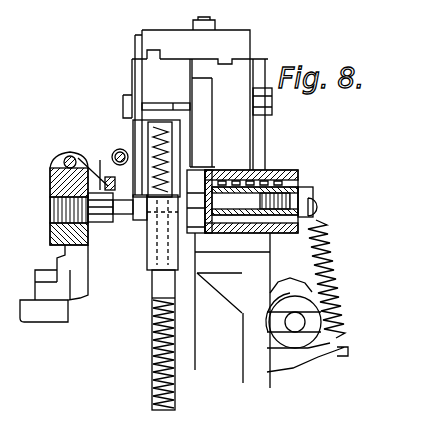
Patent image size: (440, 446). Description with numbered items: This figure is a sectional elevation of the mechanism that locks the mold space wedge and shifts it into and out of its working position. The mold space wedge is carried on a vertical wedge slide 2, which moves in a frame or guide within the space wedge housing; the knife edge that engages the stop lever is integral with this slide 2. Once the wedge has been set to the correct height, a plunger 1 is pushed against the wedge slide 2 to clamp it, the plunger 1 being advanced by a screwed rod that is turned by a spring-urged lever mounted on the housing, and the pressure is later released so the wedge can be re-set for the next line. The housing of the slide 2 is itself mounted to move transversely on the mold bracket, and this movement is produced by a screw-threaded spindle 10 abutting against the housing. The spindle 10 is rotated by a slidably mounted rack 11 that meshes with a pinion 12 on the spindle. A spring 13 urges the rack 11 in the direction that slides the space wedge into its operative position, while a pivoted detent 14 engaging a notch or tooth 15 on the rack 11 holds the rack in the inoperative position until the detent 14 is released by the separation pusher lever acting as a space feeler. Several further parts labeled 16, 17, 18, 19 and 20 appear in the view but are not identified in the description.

The plunger 1 is at (142, 78).
The wedge slide 2 is at (140, 232).
The screw-threaded spindle 10 is at (62, 222).
The rack 11 is at (75, 163).
The pinion 12 is at (132, 224).
The spring 13 is at (311, 199).
The pivoted detent 14 is at (298, 183).
The notch or tooth 15 is at (213, 176).
The piston 16 is at (268, 171).
The bracket 17 is at (237, 133).
The spring 18 is at (150, 99).
The plunger 19 is at (165, 104).
The foot bracket 20 is at (71, 283).